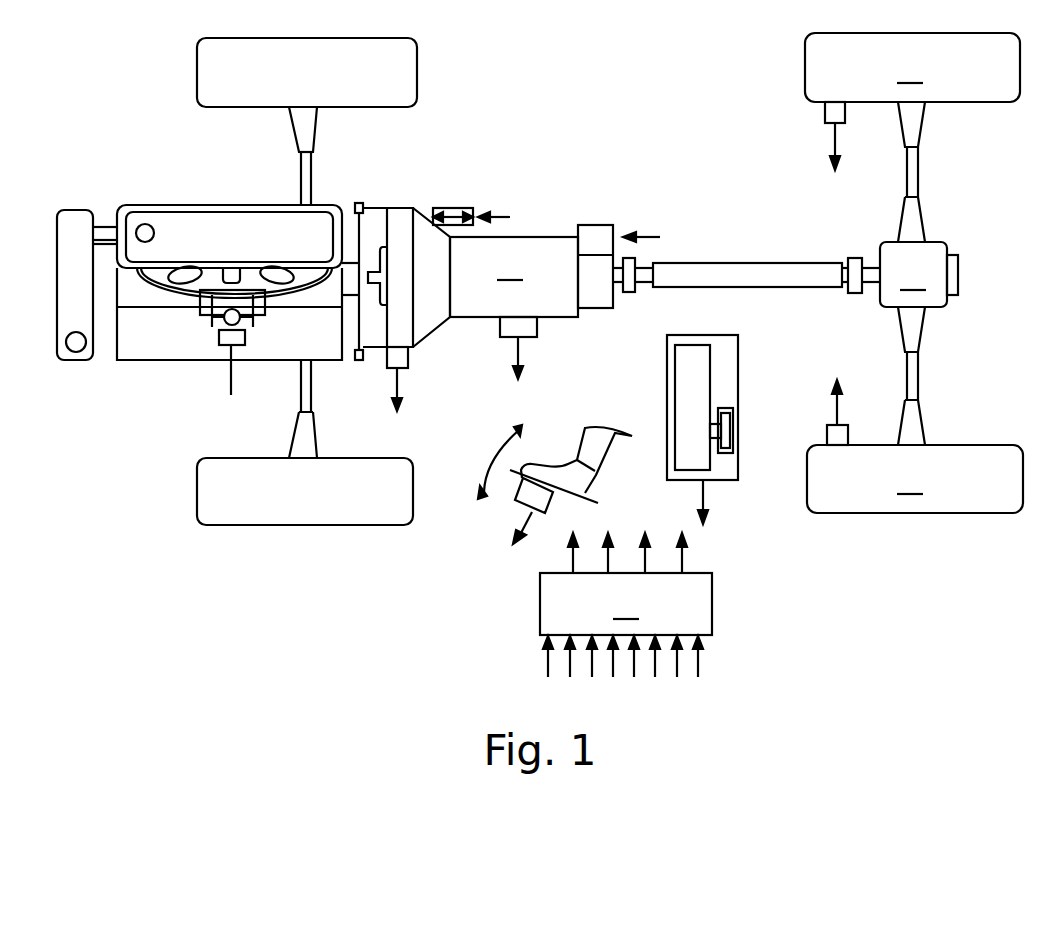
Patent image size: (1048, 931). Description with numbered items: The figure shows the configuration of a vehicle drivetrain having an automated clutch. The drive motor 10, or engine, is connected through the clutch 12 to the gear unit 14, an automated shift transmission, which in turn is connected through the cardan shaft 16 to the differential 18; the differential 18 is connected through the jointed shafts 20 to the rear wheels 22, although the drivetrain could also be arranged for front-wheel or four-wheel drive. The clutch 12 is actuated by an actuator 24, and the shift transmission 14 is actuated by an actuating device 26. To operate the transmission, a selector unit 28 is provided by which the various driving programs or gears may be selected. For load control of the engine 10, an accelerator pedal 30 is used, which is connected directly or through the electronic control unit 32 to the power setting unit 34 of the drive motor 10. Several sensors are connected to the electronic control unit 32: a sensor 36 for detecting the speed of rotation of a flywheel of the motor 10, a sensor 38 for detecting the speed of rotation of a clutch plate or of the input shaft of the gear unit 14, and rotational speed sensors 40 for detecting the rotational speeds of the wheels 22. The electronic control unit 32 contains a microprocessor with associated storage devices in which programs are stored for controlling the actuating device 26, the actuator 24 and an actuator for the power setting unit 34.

The drive motor 10 is at (188, 233).
The clutch 12 is at (400, 217).
The gear unit 14 is at (495, 277).
The cardan shaft 16 is at (755, 278).
The differential 18 is at (919, 274).
The jointed shafts 20 is at (913, 167).
The rear wheels 22 is at (914, 273).
The actuator 24 is at (450, 210).
The actuating device 26 is at (595, 238).
The selector unit 28 is at (727, 363).
The accelerator pedal 30 is at (537, 470).
The electronic control unit 32 is at (626, 605).
The power setting unit 34 is at (220, 338).
The sensor 36 is at (405, 358).
The sensor 38 is at (525, 327).
The rotational speed sensors 40 is at (828, 113).